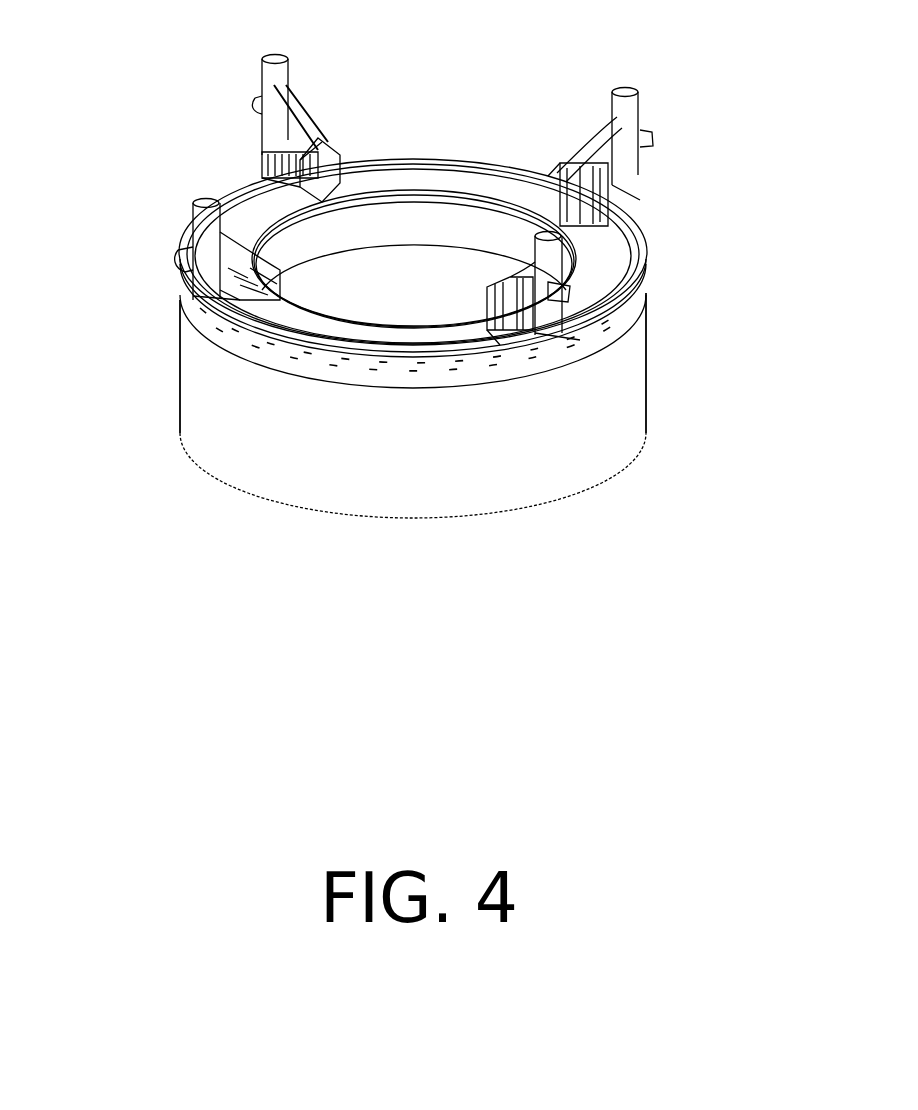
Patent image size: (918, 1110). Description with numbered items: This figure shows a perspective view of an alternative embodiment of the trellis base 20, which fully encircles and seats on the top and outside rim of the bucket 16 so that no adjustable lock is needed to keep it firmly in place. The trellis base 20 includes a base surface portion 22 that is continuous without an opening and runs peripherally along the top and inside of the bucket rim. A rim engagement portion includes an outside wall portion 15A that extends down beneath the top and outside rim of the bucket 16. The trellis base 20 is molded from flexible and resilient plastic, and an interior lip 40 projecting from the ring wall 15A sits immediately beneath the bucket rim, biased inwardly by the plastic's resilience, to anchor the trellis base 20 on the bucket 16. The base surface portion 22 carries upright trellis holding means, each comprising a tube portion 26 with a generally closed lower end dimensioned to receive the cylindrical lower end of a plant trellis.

The trellis base 20 is at (166, 276).
The bucket 16 is at (430, 479).
The outside wall portion 15A is at (648, 293).
The interior lip 40 is at (597, 332).
The base surface portion 22 is at (366, 184).
The tube portion 26 is at (640, 117).